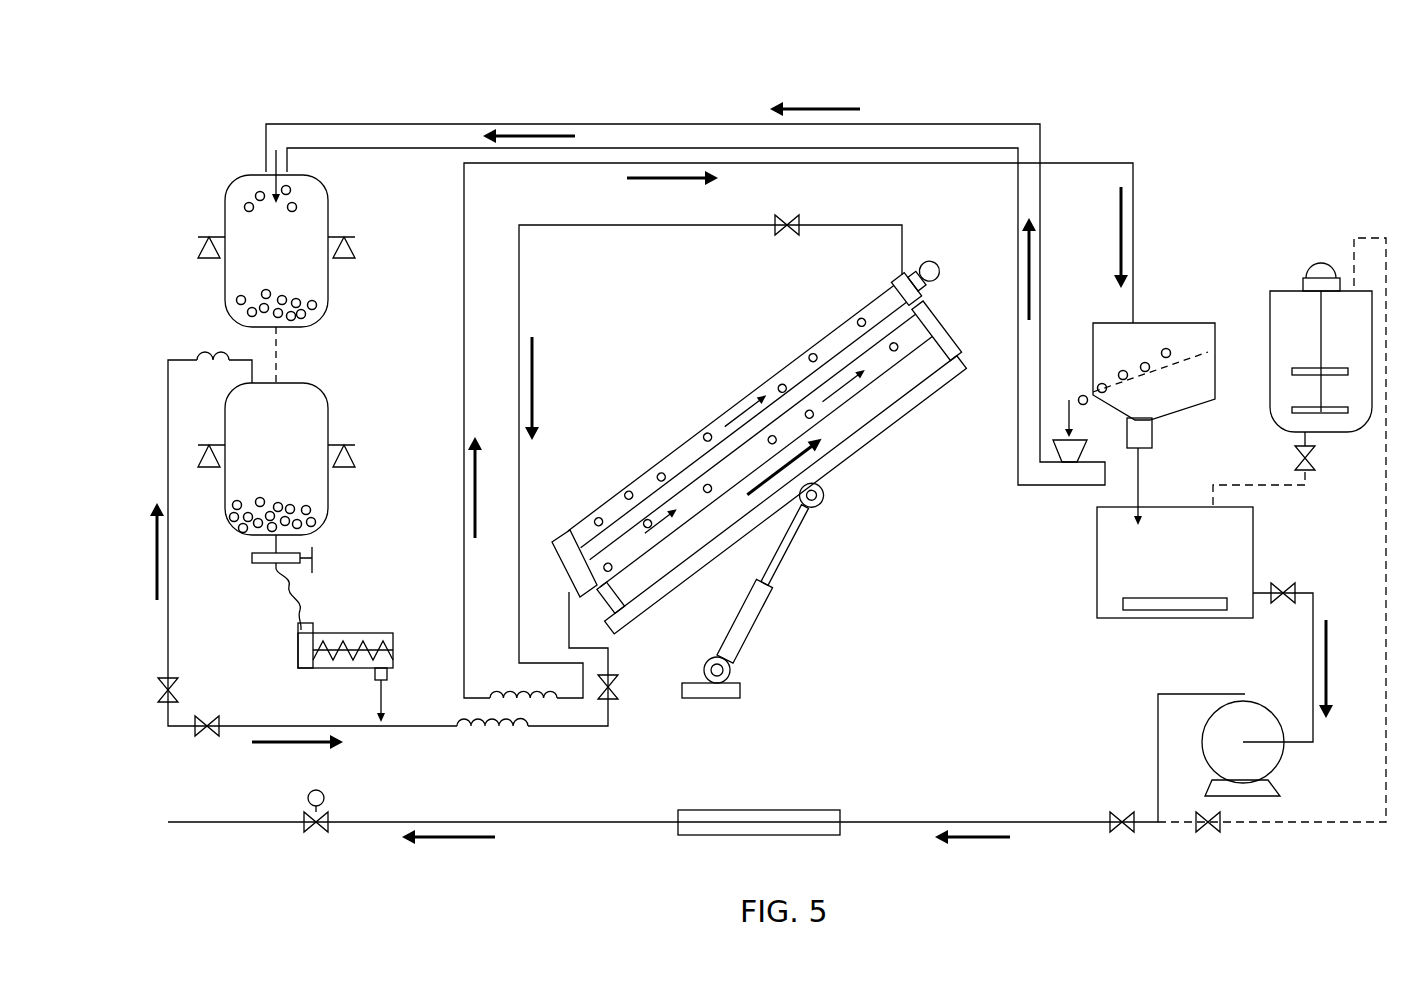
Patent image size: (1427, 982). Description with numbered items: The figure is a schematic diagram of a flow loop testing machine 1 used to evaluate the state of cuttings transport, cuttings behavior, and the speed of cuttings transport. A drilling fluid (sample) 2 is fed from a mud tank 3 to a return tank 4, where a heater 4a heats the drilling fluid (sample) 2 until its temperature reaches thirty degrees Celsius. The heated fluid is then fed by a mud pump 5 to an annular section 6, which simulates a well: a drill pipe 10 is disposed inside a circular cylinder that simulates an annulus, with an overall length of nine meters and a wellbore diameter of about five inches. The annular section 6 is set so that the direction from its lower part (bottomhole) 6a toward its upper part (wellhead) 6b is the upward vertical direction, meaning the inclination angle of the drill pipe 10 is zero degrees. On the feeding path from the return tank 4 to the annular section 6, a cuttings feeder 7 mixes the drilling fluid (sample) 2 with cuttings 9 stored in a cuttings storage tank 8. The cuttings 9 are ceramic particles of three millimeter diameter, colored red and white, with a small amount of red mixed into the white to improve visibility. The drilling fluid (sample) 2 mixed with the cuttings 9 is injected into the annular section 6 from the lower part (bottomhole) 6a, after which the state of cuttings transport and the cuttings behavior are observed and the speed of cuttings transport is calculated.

The flow loop testing machine 1 is at (1046, 66).
The drilling fluid (sample) 2 is at (880, 363).
The mud tank 3 is at (1283, 303).
The return tank 4 is at (1105, 565).
The heater 4a is at (1158, 608).
The mud pump 5 is at (1257, 715).
The annular section 6 is at (735, 375).
The lower part (bottomhole) 6a is at (552, 541).
The upper part (wellhead) 6b is at (917, 273).
The cuttings feeder 7 is at (362, 633).
The cuttings storage tank 8 is at (232, 420).
The cuttings 9 is at (325, 522).
The drill pipe 10 is at (852, 355).